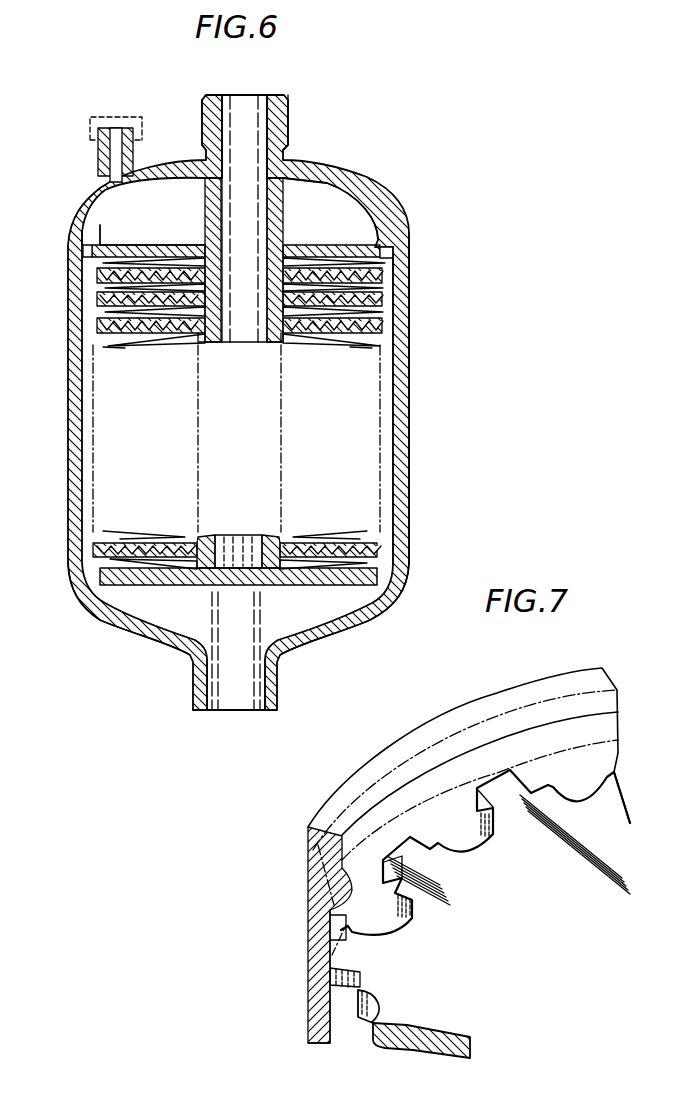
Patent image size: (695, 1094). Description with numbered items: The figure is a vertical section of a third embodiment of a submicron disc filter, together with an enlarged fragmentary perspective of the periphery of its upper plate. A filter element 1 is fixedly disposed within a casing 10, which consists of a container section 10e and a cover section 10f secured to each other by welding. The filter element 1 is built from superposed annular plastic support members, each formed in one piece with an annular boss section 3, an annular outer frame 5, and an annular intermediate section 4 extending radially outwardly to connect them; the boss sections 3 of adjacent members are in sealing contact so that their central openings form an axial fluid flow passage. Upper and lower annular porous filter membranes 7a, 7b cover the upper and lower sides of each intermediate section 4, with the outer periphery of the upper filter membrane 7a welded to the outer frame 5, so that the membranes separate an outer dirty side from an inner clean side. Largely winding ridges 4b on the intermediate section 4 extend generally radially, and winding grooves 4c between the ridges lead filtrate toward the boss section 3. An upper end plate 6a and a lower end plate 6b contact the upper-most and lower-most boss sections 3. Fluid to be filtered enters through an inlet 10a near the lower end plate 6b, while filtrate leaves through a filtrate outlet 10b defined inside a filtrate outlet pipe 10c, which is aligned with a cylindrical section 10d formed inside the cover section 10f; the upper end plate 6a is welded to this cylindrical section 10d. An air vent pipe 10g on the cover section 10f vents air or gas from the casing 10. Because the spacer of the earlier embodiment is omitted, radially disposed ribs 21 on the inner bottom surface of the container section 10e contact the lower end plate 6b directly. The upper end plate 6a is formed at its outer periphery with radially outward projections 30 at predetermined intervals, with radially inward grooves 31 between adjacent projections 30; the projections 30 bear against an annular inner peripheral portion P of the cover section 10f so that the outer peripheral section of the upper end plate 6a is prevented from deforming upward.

In FIG. 6, the filter element 1 is at (391, 443).
In FIG. 6, the boss section 3 is at (289, 258).
In FIG. 6, the intermediate section 4 is at (345, 319).
In FIG. 6, the largely winding elongate ridge 4b is at (125, 300).
In FIG. 6, the winding groove 4c is at (174, 334).
In FIG. 6, the outer frame 5 is at (340, 313).
In FIG. 6, the upper end plate 6a is at (327, 247).
In FIG. 7, the upper end plate 6a is at (628, 790).
In FIG. 6, the lower end plate 6b is at (306, 590).
In FIG. 6, the upper filter membrane 7a is at (343, 257).
In FIG. 6, the lower filter membrane 7b is at (143, 342).
In FIG. 6, the casing 10 is at (67, 428).
In FIG. 6, the inlet 10a is at (213, 690).
In FIG. 6, the filtrate outlet 10b is at (243, 108).
In FIG. 6, the filtrate outlet pipe 10c is at (215, 122).
In FIG. 6, the cylindrical section 10d is at (287, 245).
In FIG. 6, the container section 10e is at (410, 470).
In FIG. 7, the container section 10e is at (307, 988).
In FIG. 6, the cover section 10f is at (300, 238).
In FIG. 7, the cover section 10f is at (308, 880).
In FIG. 6, the air vent pipe 10g is at (98, 152).
In FIG. 6, the ribs 21 is at (347, 614).
In FIG. 6, the projections 30 is at (386, 252).
In FIG. 7, the projections 30 is at (410, 847).
In FIG. 6, the grooves 31 is at (111, 254).
In FIG. 7, the grooves 31 is at (393, 925).
In FIG. 6, the annular inner peripheral portion P is at (84, 238).
In FIG. 7, the annular inner peripheral portion P is at (340, 922).